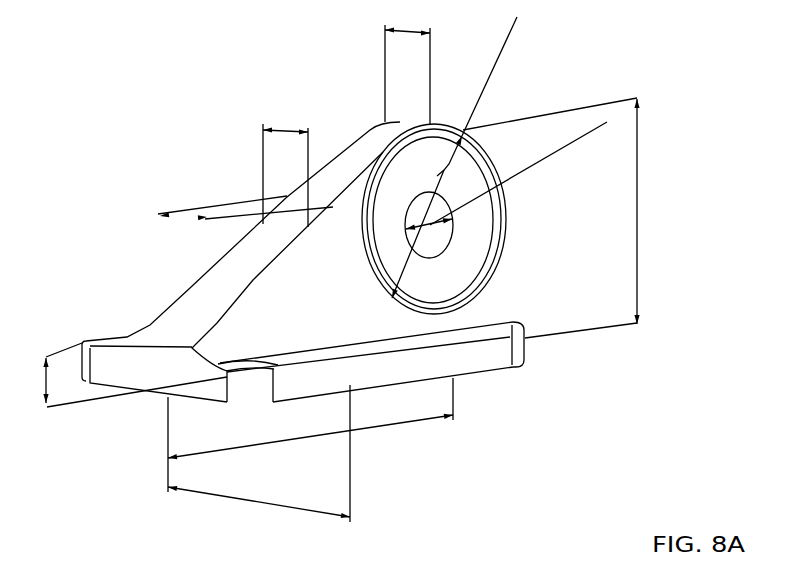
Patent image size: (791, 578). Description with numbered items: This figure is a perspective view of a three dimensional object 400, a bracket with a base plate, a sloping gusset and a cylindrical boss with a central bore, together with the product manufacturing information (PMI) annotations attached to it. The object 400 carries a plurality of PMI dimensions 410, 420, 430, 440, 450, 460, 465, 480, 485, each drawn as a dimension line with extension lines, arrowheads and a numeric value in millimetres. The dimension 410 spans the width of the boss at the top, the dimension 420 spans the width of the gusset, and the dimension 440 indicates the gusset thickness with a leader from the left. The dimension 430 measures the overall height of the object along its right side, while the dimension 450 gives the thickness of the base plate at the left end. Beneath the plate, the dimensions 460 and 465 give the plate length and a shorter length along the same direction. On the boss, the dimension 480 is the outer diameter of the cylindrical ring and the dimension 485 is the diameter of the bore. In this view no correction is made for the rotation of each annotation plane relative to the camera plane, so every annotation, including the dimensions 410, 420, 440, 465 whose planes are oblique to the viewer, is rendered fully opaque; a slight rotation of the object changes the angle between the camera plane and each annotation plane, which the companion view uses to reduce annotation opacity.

The three dimensional object 400 is at (211, 284).
The PMI dimension 410 is at (382, 46).
The PMI dimension 420 is at (259, 157).
The PMI dimension 430 is at (615, 101).
The PMI dimension 440 is at (200, 201).
The PMI dimension 450 is at (68, 411).
The PMI dimension 460 is at (403, 423).
The PMI dimension 465 is at (354, 501).
The PMI dimension 480 is at (502, 60).
The PMI dimension 485 is at (545, 160).